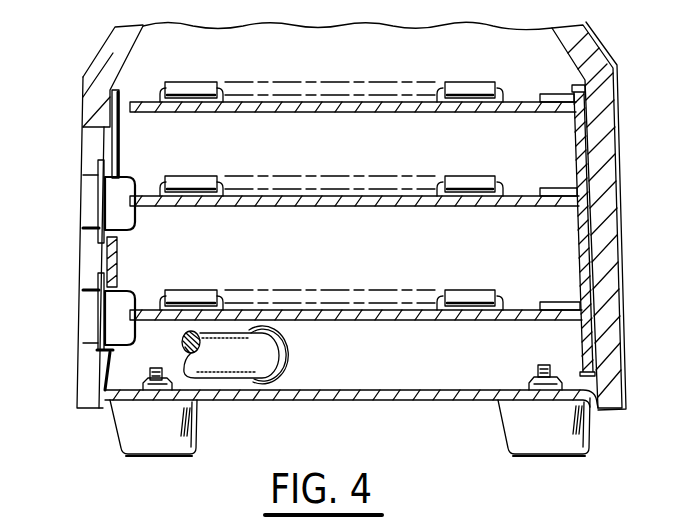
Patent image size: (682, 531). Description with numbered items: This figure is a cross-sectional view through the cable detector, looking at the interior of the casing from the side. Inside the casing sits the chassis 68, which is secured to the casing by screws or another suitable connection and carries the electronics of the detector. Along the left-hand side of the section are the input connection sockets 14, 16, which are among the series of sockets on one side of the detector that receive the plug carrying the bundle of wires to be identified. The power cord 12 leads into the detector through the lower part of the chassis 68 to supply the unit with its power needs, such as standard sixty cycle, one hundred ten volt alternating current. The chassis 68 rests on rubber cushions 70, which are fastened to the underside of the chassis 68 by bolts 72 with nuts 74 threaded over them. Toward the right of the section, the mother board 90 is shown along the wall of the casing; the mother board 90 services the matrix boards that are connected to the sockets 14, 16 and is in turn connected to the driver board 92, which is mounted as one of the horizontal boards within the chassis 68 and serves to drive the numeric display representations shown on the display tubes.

The power cord 12 is at (268, 352).
The socket 14 is at (87, 194).
The socket 16 is at (85, 311).
The chassis 68 is at (383, 400).
The rubber cushion 70 is at (552, 443).
The bolt 72 is at (541, 366).
The nut 74 is at (532, 379).
The mother board 90 is at (589, 145).
The driver board 92 is at (518, 100).